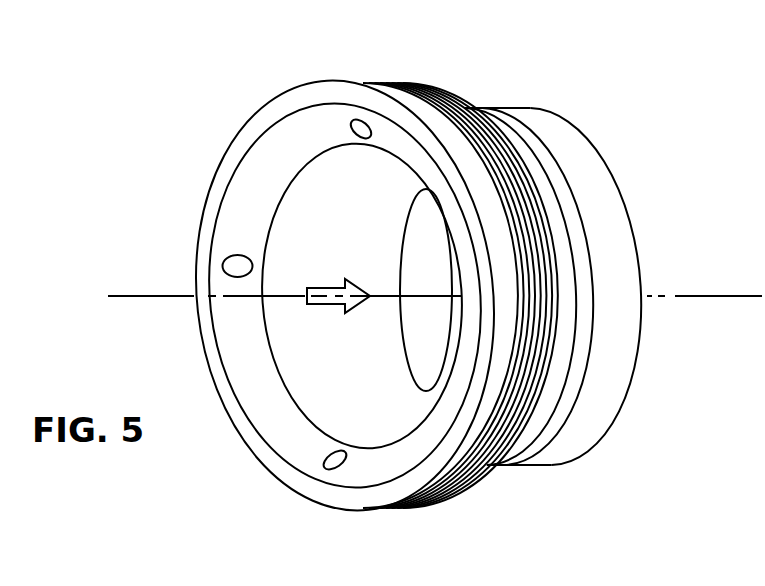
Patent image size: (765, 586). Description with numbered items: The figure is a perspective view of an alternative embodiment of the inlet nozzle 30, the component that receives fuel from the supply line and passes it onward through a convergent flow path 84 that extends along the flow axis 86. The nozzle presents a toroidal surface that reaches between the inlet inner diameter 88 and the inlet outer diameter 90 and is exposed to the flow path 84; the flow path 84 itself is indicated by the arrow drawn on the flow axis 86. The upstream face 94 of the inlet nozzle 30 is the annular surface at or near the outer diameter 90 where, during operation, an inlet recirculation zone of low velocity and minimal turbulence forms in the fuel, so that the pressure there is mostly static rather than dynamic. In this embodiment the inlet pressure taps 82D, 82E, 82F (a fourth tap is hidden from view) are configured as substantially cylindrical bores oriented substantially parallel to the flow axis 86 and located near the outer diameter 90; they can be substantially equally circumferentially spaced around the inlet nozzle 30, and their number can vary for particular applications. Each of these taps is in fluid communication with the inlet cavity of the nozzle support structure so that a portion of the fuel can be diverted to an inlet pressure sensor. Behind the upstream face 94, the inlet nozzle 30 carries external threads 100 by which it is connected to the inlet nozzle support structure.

The inlet nozzle 30 is at (577, 151).
The inlet pressure tap 82D is at (350, 128).
The inlet pressure tap 82E is at (237, 254).
The inlet pressure tap 82F is at (323, 463).
The flow path 84 is at (326, 290).
The flow axis 86 is at (719, 296).
The inlet inner diameter 88 is at (323, 398).
The inlet outer diameter 90 is at (462, 493).
The upstream face 94 is at (223, 178).
The external threads 100 is at (503, 458).